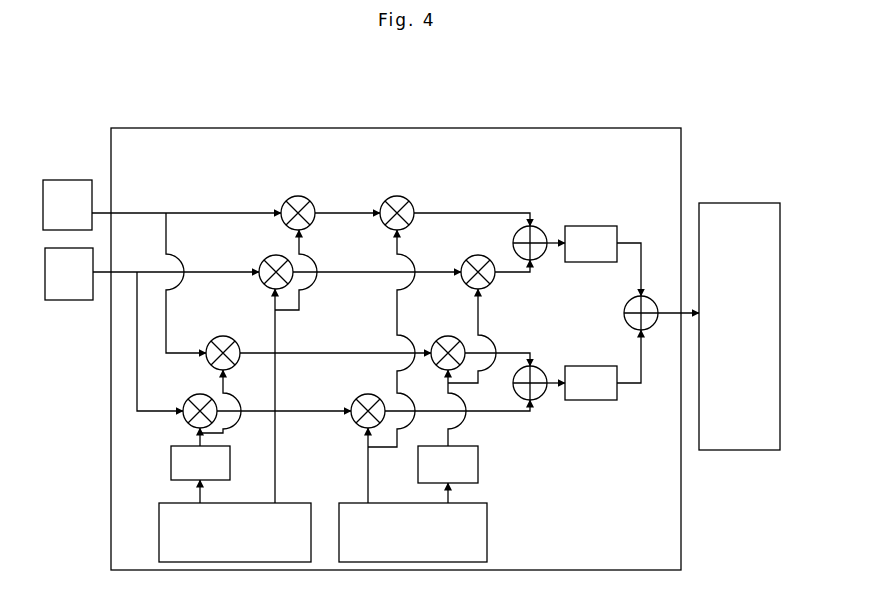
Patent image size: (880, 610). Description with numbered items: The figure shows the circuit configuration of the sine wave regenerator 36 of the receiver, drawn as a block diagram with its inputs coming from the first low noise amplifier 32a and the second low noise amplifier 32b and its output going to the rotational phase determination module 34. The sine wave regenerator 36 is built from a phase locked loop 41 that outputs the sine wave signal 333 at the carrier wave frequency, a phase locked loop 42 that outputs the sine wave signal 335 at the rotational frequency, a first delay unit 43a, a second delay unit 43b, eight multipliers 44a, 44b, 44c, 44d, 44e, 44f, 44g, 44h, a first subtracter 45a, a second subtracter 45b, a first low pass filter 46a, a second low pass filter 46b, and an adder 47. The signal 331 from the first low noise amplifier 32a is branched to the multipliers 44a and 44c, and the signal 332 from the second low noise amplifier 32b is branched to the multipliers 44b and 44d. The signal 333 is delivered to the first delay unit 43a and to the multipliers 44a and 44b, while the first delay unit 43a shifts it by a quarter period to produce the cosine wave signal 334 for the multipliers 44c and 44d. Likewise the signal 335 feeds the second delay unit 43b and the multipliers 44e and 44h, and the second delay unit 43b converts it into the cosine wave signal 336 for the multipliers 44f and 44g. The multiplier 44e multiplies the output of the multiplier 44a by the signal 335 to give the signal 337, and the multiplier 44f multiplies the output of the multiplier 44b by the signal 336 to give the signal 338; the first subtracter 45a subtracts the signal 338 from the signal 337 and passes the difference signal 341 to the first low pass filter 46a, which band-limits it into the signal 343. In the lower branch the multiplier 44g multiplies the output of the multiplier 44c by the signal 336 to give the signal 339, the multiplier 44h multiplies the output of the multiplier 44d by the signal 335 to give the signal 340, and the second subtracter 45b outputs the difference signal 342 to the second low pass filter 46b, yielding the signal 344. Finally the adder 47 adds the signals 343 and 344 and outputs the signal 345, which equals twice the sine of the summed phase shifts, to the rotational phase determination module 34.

The sine wave regenerator 36 is at (605, 128).
The first low noise amplifier 32a is at (62, 180).
The second low noise amplifier 32b is at (63, 300).
The rotational phase determination module 34 is at (745, 203).
The signal 331 is at (129, 213).
The signal 332 is at (125, 272).
The signal in the form of a sine wave 333 is at (277, 331).
The signal 334 is at (208, 433).
The signal in the form of a sine wave 335 is at (368, 472).
The signal 336 is at (455, 385).
The signal 337 is at (483, 213).
The signal 338 is at (513, 276).
The signal 339 is at (514, 351).
The signal 340 is at (504, 412).
The signal 341 is at (550, 258).
The signal 342 is at (550, 399).
The signal 343 is at (643, 243).
The signal 344 is at (645, 365).
The signal 345 is at (663, 308).
The phase locked loop 41 is at (159, 527).
The phase locked loop 42 is at (487, 527).
The first delay unit 43a is at (171, 462).
The second delay unit 43b is at (478, 462).
The multiplier 44a is at (309, 203).
The multiplier 44b is at (265, 263).
The multiplier 44c is at (212, 344).
The multiplier 44d is at (190, 400).
The multiplier 44e is at (408, 203).
The multiplier 44f is at (468, 263).
The multiplier 44g is at (438, 344).
The multiplier 44h is at (357, 400).
The first subtracter 45a is at (543, 233).
The second subtracter 45b is at (543, 373).
The first low pass filter 46a is at (591, 226).
The second low pass filter 46b is at (591, 366).
The adder 47 is at (631, 311).